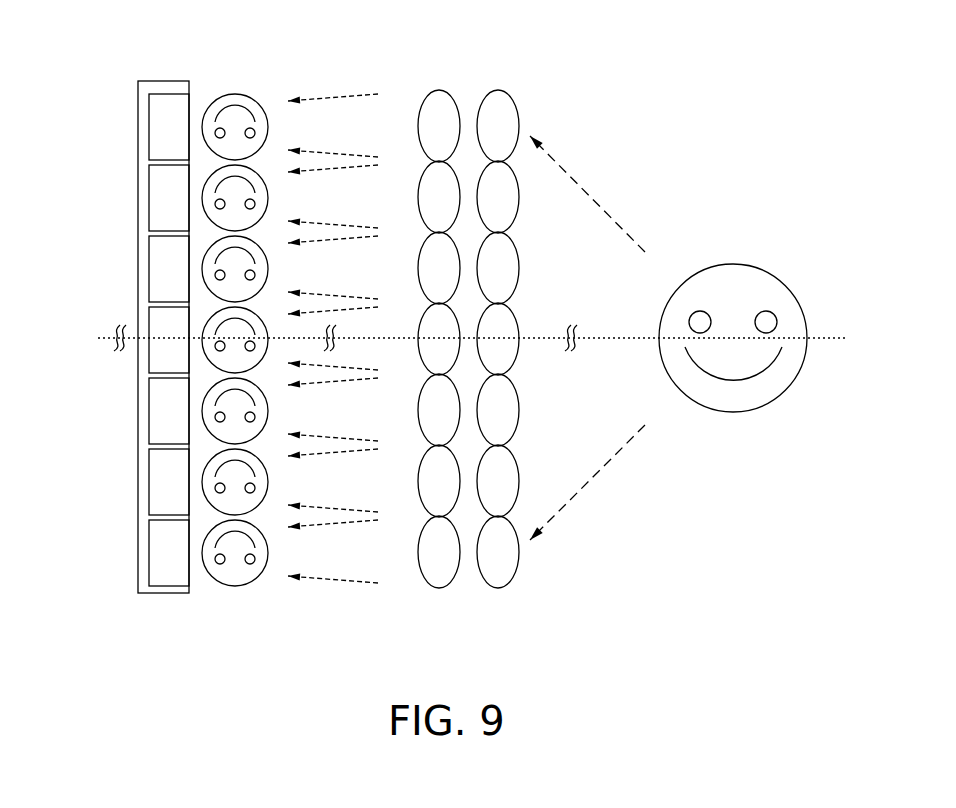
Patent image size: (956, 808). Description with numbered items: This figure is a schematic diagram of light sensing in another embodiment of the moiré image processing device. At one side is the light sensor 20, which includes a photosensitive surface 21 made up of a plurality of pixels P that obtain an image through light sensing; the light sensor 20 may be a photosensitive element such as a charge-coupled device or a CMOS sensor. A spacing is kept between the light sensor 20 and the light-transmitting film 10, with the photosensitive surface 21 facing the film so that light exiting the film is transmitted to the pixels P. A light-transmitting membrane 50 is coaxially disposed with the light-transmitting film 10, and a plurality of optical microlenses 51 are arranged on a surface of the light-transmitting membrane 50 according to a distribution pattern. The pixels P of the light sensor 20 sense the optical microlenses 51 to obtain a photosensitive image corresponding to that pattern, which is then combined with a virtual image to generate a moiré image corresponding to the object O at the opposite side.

The light-transmitting film 10 is at (498, 78).
The light sensor 20 is at (138, 583).
The photosensitive surface 21 is at (169, 374).
The pixels P is at (167, 128).
The light-transmitting membrane 50 is at (440, 78).
The optical microlenses 51 is at (418, 122).
The object O is at (733, 262).